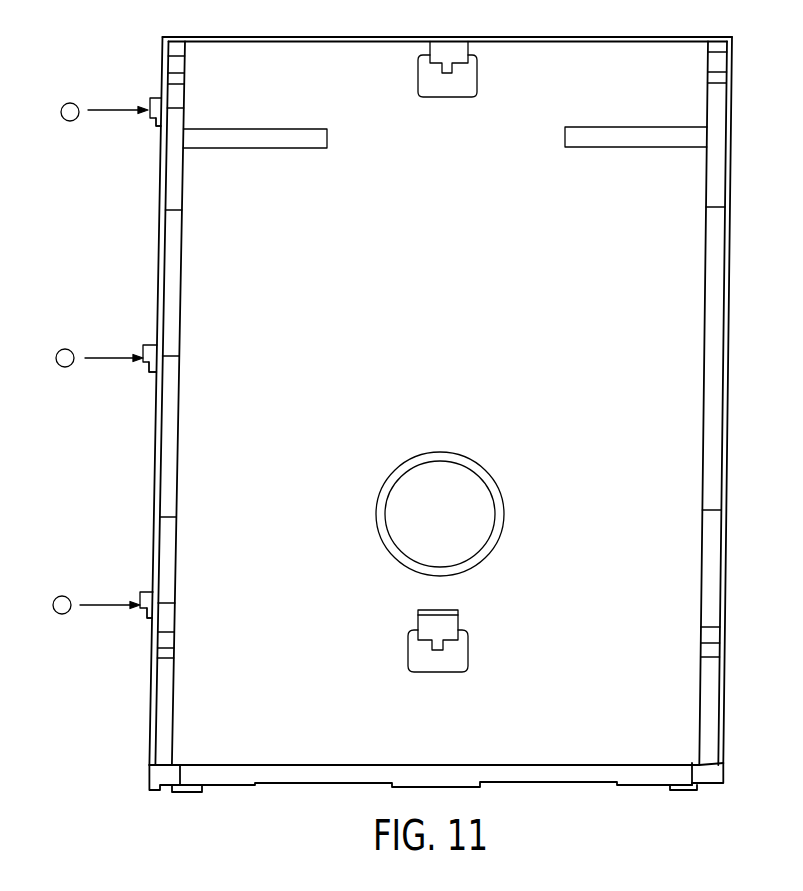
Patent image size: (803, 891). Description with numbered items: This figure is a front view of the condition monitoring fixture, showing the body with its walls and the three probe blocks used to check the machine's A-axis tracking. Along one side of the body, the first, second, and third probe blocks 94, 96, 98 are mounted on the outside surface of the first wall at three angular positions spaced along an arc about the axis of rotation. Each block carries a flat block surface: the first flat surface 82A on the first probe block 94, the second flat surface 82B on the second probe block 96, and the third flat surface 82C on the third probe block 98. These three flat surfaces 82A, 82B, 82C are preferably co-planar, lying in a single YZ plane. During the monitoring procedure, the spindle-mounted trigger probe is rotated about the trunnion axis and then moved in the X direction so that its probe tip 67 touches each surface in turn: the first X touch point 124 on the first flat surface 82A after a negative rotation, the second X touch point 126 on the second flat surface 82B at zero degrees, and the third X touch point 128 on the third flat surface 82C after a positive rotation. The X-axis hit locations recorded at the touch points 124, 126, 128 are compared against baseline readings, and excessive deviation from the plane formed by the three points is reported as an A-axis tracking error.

The probe tip 67 is at (67, 103).
The first flat surface 82A is at (143, 592).
The second flat surface 82B is at (146, 345).
The third flat surface 82C is at (150, 98).
The first probe block 94 is at (158, 603).
The second probe block 96 is at (160, 356).
The third probe block 98 is at (183, 108).
The first X touch point 124 is at (138, 613).
The second X touch point 126 is at (140, 366).
The third X touch point 128 is at (145, 120).